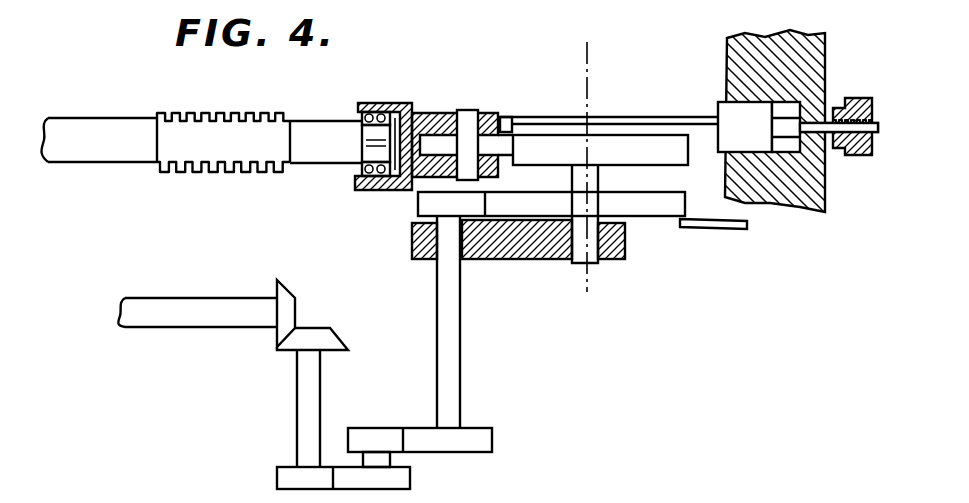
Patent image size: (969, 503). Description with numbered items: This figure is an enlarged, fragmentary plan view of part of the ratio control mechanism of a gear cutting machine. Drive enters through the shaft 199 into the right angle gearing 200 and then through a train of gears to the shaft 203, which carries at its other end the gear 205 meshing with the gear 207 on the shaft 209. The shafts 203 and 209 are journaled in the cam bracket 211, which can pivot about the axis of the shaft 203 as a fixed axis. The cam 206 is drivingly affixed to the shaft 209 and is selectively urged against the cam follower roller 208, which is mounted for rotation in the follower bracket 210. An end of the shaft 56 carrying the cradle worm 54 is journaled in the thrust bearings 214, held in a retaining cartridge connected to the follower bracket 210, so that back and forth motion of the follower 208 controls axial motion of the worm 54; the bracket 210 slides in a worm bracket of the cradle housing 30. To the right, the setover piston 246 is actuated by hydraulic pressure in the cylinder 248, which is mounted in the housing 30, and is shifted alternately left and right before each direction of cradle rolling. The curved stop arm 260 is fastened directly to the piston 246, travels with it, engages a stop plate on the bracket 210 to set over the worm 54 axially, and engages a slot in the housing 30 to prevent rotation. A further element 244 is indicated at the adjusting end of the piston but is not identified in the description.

The cradle housing 30 is at (812, 203).
The cradle worm 54 is at (208, 113).
The shaft 56 is at (78, 128).
The shaft 199 is at (200, 316).
The right angle gearing 200 is at (270, 291).
The shaft 203 is at (460, 363).
The gear 205 is at (432, 202).
The cam 206 is at (670, 157).
The gear 207 is at (663, 217).
The cam follower roller 208 is at (506, 128).
The shaft 209 is at (593, 260).
The follower bracket 210 is at (455, 100).
The cam bracket 211 is at (513, 260).
The thrust bearings 214 is at (362, 117).
The adjusting nut 244 is at (724, 92).
The setover piston 246 is at (766, 140).
The cylinder 248 is at (801, 101).
The stop arm 260 is at (647, 104).